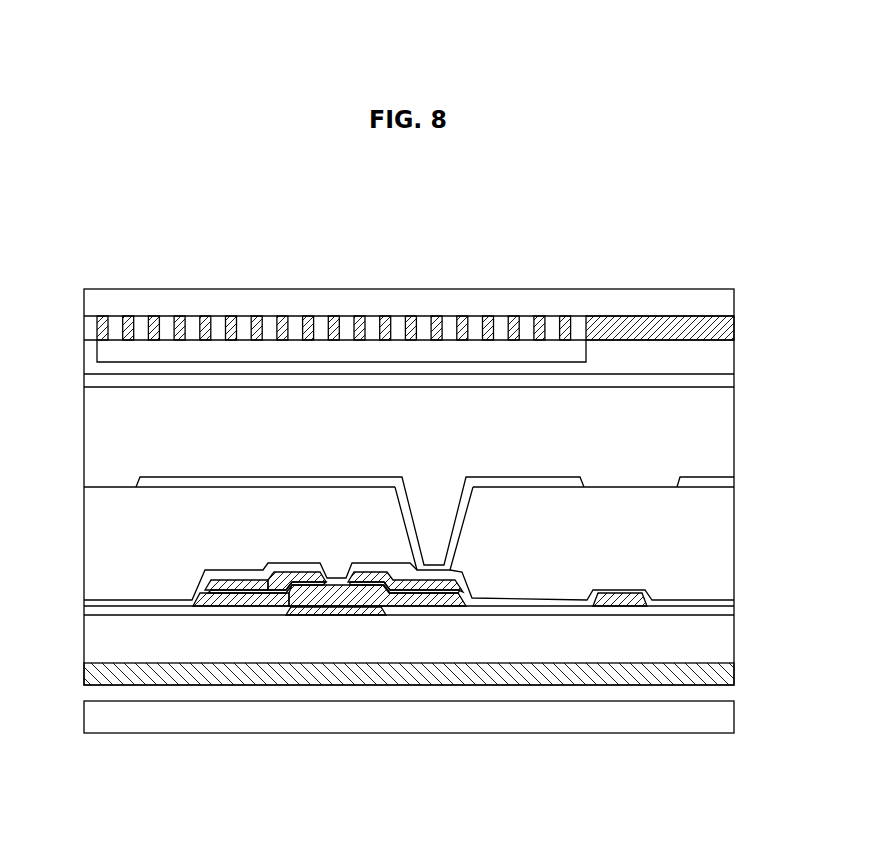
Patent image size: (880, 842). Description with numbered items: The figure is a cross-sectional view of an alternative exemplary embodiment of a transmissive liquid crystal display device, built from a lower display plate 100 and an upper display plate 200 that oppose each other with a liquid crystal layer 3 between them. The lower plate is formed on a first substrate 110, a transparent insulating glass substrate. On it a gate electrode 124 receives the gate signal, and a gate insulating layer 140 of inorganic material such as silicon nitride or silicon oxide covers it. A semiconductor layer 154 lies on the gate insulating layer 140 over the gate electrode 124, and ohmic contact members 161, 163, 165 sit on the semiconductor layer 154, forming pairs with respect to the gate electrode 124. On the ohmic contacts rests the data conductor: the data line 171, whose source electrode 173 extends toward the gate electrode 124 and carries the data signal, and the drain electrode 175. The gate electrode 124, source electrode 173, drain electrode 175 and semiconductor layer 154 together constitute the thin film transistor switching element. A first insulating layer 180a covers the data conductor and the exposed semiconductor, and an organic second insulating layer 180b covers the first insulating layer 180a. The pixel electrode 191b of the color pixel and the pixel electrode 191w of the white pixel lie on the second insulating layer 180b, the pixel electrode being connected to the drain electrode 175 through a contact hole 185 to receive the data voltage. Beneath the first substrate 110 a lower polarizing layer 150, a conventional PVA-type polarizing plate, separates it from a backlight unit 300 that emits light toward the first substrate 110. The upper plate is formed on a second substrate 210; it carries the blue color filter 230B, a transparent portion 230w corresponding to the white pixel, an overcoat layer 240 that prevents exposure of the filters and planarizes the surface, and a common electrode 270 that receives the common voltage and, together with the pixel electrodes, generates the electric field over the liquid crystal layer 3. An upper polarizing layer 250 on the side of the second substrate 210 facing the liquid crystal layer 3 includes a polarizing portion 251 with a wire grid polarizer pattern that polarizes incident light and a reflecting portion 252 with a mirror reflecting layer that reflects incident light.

The liquid crystal layer 3 is at (747, 387).
The lower display plate 100 is at (747, 477).
The first substrate 110 is at (493, 642).
The gate electrode 124 is at (337, 609).
The gate insulating layer 140 is at (525, 608).
The lower polarizing layer 150 is at (95, 673).
The semiconductor layer 154 is at (412, 605).
The ohmic contact member 161 is at (243, 596).
The ohmic contact member 163 is at (312, 587).
The ohmic contact member 165 is at (433, 593).
The data line 171 is at (222, 585).
The source electrode 173 is at (293, 578).
The drain electrode 175 is at (373, 575).
The first insulating layer 180a is at (560, 602).
The second insulating layer 180b is at (130, 545).
The contact hole 185 is at (455, 525).
The pixel electrode 191b is at (527, 482).
The pixel electrode 191w is at (705, 482).
The upper display plate 200 is at (747, 289).
The second substrate 210 is at (300, 300).
The blue color filter 230B is at (427, 352).
The transparent portion 230w is at (699, 344).
The overcoat layer 240 is at (93, 353).
The upper polarizing layer 250 is at (613, 232).
The polarizing portion 251 is at (516, 323).
The reflecting portion 252 is at (612, 327).
The common electrode 270 is at (95, 380).
The backlight unit 300 is at (722, 720).